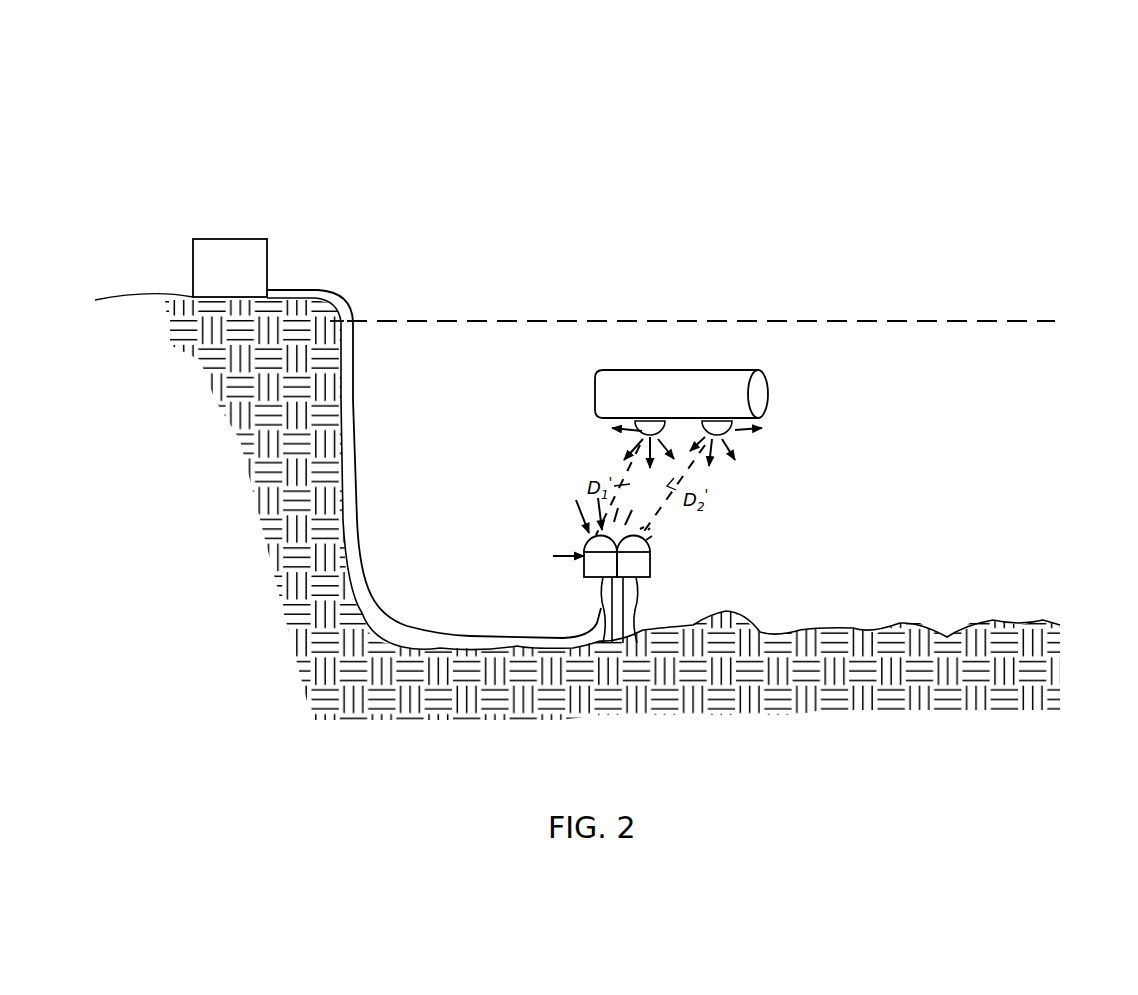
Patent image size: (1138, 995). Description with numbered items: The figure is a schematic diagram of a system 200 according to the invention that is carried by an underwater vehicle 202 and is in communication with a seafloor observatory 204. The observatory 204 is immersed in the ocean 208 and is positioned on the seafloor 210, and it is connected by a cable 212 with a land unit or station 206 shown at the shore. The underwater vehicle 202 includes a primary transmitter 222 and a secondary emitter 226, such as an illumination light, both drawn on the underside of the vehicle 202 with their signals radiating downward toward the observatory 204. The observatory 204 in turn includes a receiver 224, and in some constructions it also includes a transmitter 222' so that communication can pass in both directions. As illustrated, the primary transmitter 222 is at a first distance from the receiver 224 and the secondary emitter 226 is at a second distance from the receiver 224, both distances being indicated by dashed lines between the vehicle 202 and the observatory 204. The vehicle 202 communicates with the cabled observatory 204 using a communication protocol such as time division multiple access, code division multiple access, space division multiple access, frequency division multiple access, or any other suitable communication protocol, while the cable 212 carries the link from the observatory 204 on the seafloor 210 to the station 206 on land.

The system 200 is at (985, 170).
The underwater vehicle 202 is at (735, 372).
The seafloor observatory 204 is at (652, 572).
The land unit or station 206 is at (248, 240).
The ocean 208 is at (955, 330).
The seafloor 210 is at (915, 625).
The cable 212 is at (358, 492).
The primary transmitter 222 is at (638, 482).
The transmitter 222' is at (744, 517).
The receiver 224 is at (585, 545).
The secondary emitter 226 is at (740, 438).